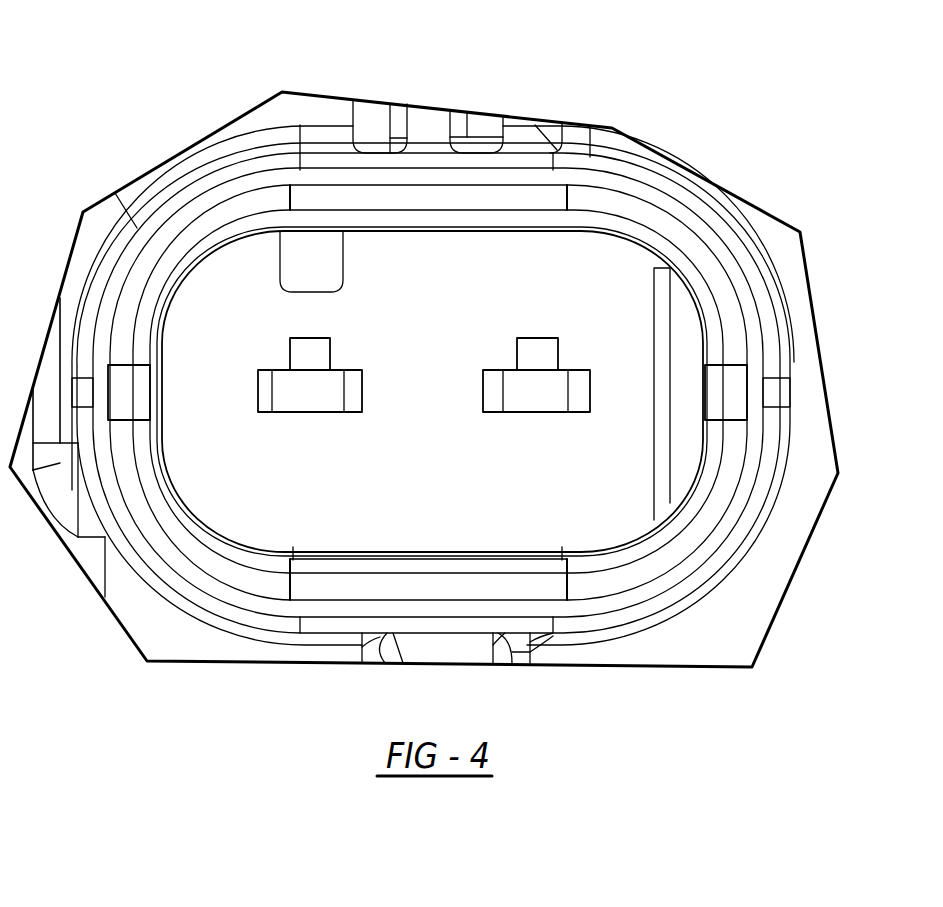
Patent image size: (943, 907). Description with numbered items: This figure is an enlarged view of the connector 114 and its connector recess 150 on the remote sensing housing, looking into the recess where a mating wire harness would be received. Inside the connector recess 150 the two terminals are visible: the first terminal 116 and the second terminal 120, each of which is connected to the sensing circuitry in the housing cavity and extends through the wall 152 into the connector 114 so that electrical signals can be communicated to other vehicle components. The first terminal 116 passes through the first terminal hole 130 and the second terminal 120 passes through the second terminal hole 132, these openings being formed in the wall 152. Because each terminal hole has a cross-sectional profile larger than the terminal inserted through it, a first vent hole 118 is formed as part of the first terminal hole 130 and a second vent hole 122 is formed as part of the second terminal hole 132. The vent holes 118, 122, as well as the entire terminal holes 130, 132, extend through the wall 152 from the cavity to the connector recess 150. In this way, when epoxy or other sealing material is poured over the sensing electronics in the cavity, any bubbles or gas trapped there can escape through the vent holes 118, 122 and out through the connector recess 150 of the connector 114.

The connector 114 is at (797, 432).
The first terminal 116 is at (268, 386).
The first vent hole 118 is at (312, 353).
The second terminal 120 is at (493, 383).
The second vent hole 122 is at (538, 353).
The first terminal hole 130 is at (350, 350).
The second terminal hole 132 is at (575, 360).
The connector recess 150 is at (613, 487).
The wall 152 is at (257, 498).